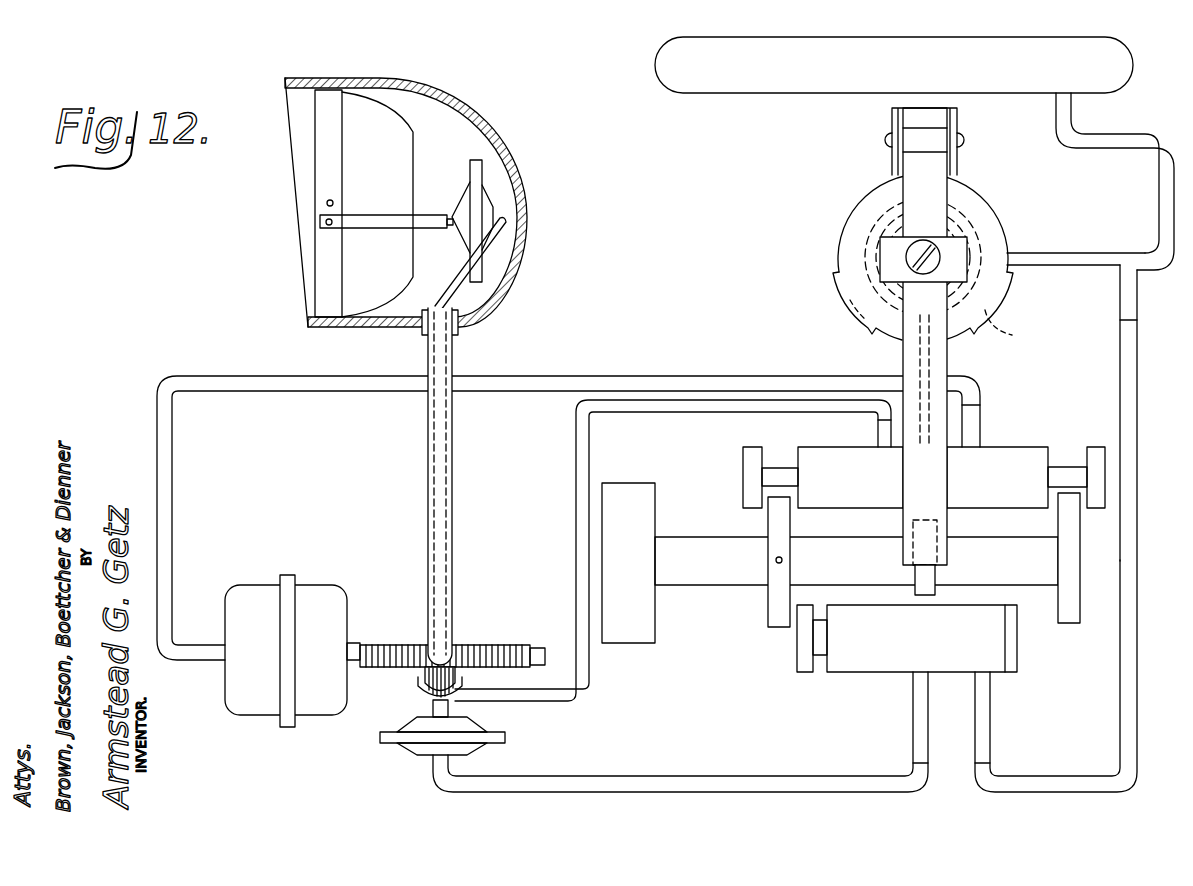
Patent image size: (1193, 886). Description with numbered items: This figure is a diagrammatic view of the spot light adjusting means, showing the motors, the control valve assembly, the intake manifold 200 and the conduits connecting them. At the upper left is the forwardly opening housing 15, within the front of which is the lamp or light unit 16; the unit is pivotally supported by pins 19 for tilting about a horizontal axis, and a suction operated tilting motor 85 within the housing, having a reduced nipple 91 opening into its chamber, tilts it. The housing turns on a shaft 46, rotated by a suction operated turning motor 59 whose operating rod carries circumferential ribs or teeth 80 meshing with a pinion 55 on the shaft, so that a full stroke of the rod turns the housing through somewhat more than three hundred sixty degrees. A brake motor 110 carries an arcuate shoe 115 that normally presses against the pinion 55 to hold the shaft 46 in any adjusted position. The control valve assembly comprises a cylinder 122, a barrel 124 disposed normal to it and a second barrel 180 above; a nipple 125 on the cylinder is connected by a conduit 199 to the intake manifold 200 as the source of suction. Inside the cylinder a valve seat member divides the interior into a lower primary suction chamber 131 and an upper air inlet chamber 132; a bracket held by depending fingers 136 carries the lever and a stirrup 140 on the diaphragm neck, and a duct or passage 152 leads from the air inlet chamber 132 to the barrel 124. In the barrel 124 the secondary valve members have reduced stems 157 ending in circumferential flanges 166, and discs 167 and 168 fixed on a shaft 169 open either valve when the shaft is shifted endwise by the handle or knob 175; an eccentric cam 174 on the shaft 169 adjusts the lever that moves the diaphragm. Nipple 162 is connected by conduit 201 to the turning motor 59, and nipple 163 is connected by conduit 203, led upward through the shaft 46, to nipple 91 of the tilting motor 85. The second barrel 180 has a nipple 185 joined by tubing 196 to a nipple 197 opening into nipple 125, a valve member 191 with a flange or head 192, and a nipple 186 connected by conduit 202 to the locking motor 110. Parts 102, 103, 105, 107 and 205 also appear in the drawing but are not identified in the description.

The housing 15 is at (455, 100).
The light unit 16 is at (312, 137).
The pins 19 is at (326, 203).
The shaft 46 is at (427, 490).
The pinion 55 is at (456, 672).
The turning motor 59 is at (268, 660).
The teeth 80 is at (505, 645).
The tilting motor 85 is at (478, 170).
The nipple 91 is at (500, 222).
The shaft 102 is at (905, 188).
The pivot knobs 103 is at (965, 140).
The reflector shaft 105 is at (372, 216).
The pivot pin 107 is at (325, 223).
The brake motor 110 is at (412, 744).
The arcuate shoe 115 is at (418, 689).
The cylinder 122 is at (878, 232).
The barrel 124 is at (864, 482).
The nipple 125 is at (1058, 260).
The primary suction chamber 131 is at (978, 218).
The air inlet chamber 132 is at (988, 344).
The depending fingers 136 is at (838, 301).
The stirrup 140 is at (880, 250).
The duct 152 is at (920, 350).
The stem 157 is at (1060, 468).
The nipple 162 is at (978, 428).
The nipple 163 is at (878, 430).
The flange 166 is at (748, 456).
The disc 167 is at (1068, 625).
The disc 168 is at (770, 605).
The shaft 169 is at (866, 561).
The eccentric cam 174 is at (940, 590).
The handle 175 is at (634, 632).
The second barrel 180 is at (894, 640).
The nipple 185 is at (990, 729).
The nipple 186 is at (913, 721).
The valve member 191 is at (820, 658).
The head 192 is at (797, 662).
The tubing 196 is at (1120, 353).
The nipple 197 is at (1120, 292).
The conduit 199 is at (1056, 116).
The intake manifold 200 is at (894, 65).
The conduit 201 is at (982, 386).
The conduit 202 is at (770, 776).
The conduit 203 is at (455, 287).
The pivot hole 205 is at (776, 557).